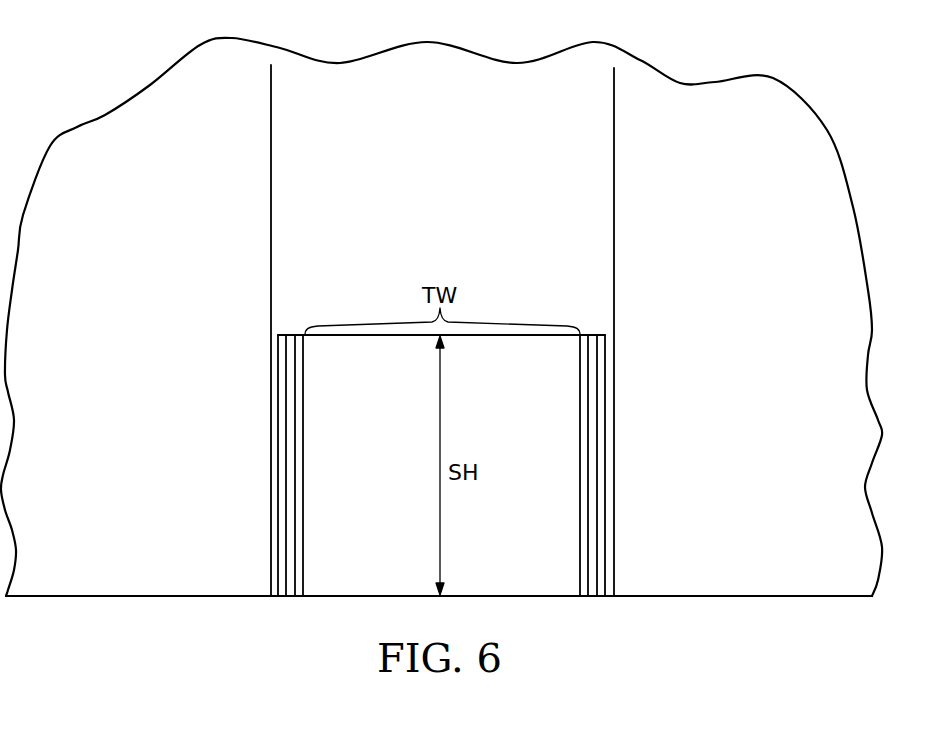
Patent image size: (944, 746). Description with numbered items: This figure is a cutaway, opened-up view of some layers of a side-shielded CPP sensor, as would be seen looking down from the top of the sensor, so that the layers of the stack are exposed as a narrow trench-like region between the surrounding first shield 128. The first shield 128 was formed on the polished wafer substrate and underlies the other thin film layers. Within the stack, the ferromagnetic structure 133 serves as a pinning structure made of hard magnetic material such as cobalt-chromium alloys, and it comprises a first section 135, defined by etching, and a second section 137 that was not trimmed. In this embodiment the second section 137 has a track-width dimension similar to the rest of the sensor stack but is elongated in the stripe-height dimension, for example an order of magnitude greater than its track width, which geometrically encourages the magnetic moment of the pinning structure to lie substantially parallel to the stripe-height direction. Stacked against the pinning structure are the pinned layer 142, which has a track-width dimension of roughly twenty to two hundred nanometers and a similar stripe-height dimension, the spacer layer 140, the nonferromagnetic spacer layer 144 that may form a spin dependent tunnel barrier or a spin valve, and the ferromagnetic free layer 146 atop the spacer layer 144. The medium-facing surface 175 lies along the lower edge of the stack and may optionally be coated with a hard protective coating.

The first shield 128 is at (168, 314).
The ferromagnetic structure 133 is at (278, 597).
The first section 135 is at (270, 567).
The second section 137 is at (463, 239).
The spacer layer 140 is at (278, 513).
The pinned layer 142 is at (286, 459).
The spacer layer 144 is at (295, 405).
The free layer 146 is at (303, 349).
The medium-facing surface 175 is at (580, 597).